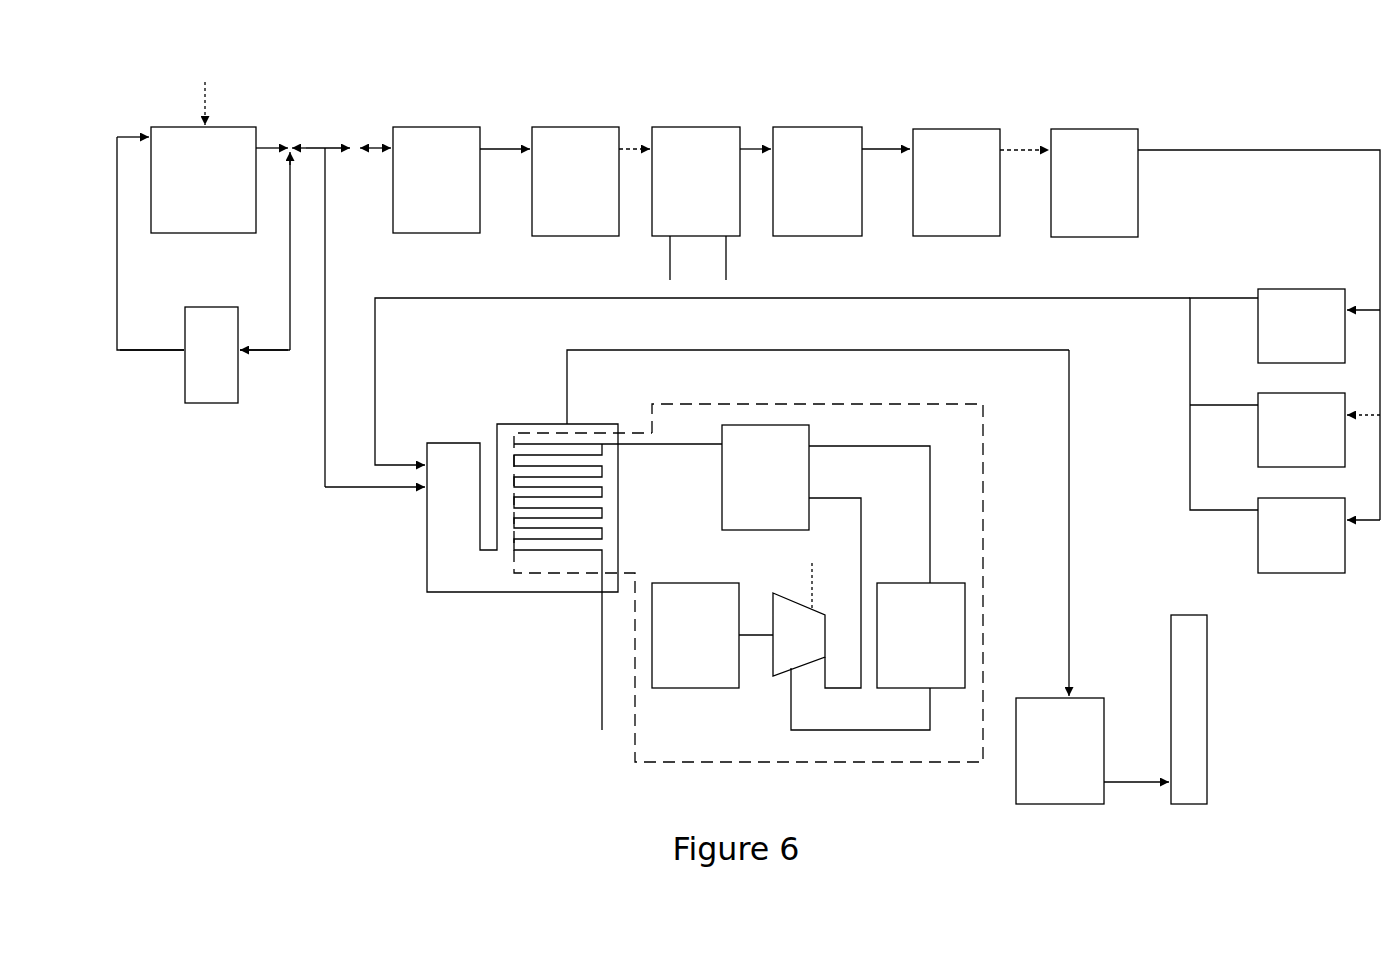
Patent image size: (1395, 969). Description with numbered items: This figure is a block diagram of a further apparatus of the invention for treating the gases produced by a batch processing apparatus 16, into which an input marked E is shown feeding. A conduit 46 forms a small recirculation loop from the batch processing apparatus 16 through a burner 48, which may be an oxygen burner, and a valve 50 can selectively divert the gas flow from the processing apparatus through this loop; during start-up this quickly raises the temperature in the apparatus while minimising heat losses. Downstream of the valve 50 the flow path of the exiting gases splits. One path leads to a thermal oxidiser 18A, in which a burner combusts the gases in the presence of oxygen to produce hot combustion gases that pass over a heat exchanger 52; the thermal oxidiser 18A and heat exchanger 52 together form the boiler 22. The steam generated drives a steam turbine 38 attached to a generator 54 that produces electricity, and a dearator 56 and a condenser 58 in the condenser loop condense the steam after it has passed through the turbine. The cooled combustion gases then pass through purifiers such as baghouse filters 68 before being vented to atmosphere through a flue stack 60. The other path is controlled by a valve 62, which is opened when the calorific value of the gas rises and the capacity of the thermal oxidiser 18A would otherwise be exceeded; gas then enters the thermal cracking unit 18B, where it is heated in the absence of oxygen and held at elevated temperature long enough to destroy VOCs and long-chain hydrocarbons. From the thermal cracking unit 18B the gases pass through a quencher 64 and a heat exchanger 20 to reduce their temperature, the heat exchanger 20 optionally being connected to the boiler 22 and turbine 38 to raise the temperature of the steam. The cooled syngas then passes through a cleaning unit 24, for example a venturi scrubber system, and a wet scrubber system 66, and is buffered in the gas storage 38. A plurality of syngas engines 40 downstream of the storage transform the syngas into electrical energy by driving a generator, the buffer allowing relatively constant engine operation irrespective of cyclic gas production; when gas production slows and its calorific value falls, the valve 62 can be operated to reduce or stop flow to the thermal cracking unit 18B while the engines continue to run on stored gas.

The batch processing apparatus 16 is at (203, 180).
The electrical energy input E is at (205, 89).
The thermal oxidiser 18A is at (522, 508).
The thermal cracking unit 18B is at (436, 180).
The heat exchanger 20 is at (696, 203).
The boiler 22 is at (540, 597).
The cleaning unit 24 is at (817, 181).
The gas storage vessel 38 is at (955, 402).
The syngas engines 40 is at (1285, 431).
The conduit 46 is at (147, 356).
The burner 48 is at (211, 355).
The valve 50 is at (289, 141).
The heat exchanger 52 is at (605, 502).
The generator 54 is at (695, 635).
The dearator 56 is at (765, 477).
The condenser 58 is at (921, 635).
The flue stack 60 is at (1212, 673).
The valve 62 is at (355, 141).
The quencher 64 is at (575, 181).
The wet scrubber system 66 is at (956, 182).
The baghouse filters 68 is at (1060, 751).